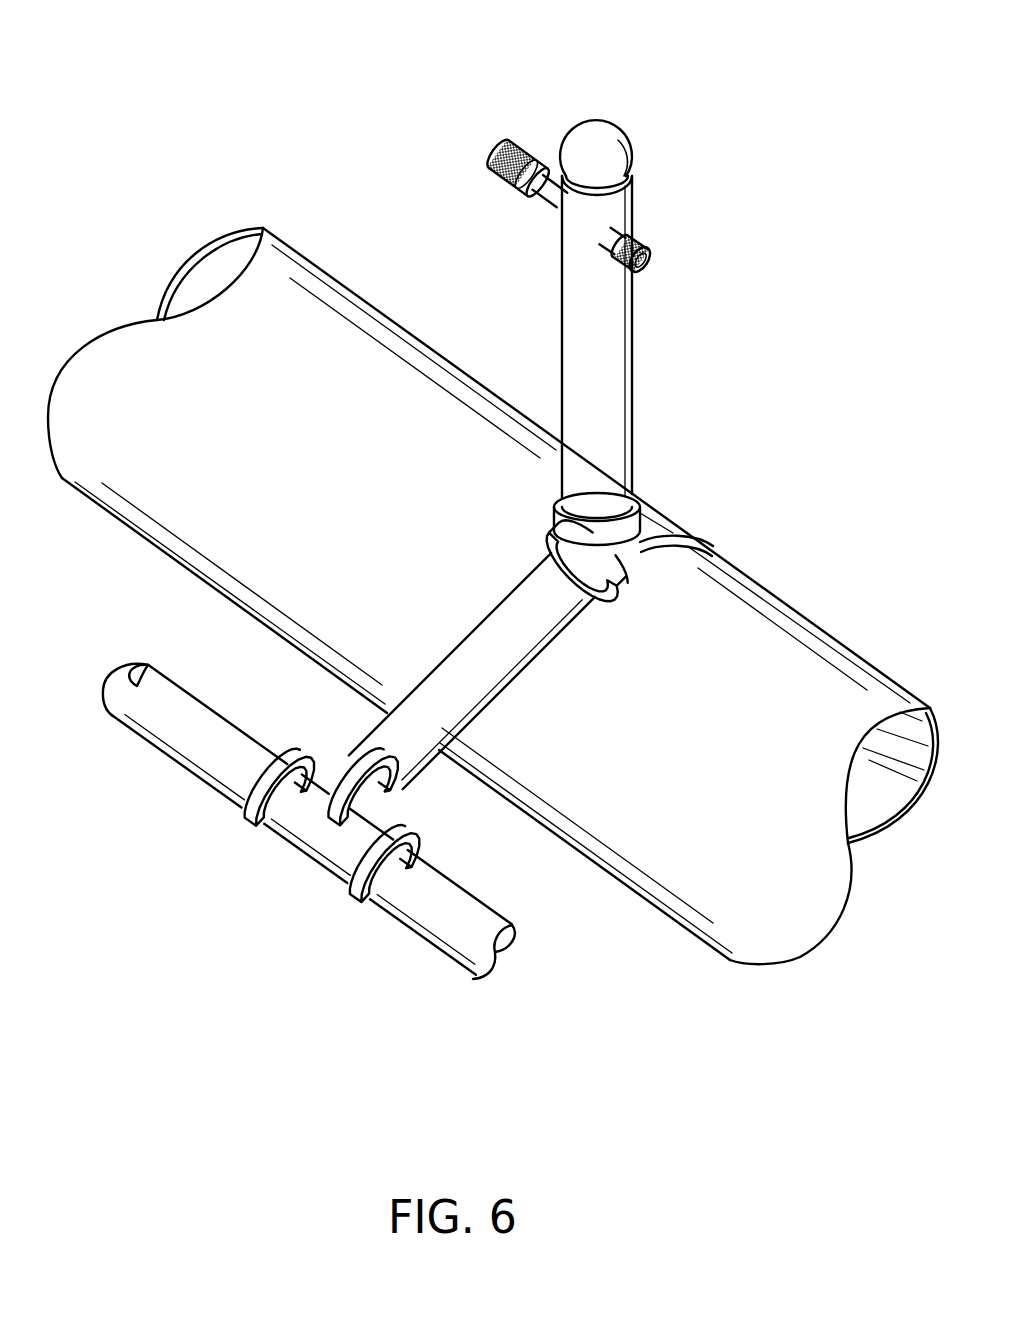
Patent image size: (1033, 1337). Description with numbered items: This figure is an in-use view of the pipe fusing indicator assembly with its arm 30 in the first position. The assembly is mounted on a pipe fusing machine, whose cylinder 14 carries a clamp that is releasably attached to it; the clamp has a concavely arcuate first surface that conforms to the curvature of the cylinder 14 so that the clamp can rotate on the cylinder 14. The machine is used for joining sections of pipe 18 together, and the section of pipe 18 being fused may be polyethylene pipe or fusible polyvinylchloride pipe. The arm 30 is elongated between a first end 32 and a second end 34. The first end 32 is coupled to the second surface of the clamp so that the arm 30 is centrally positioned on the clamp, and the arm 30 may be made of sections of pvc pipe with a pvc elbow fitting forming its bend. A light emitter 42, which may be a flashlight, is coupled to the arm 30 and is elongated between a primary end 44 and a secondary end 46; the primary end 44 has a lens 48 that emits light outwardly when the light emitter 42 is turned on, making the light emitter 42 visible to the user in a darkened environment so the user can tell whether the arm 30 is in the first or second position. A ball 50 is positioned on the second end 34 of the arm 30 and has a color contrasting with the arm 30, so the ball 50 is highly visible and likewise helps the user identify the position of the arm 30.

The cylinder 14 is at (160, 758).
The pipe 18 is at (404, 322).
The arm 30 is at (634, 405).
The first end 32 is at (343, 803).
The second end 34 is at (587, 193).
The light emitter 42 is at (521, 145).
The primary end 44 is at (660, 253).
The secondary end 46 is at (497, 152).
The lens 48 is at (652, 275).
The ball 50 is at (627, 133).